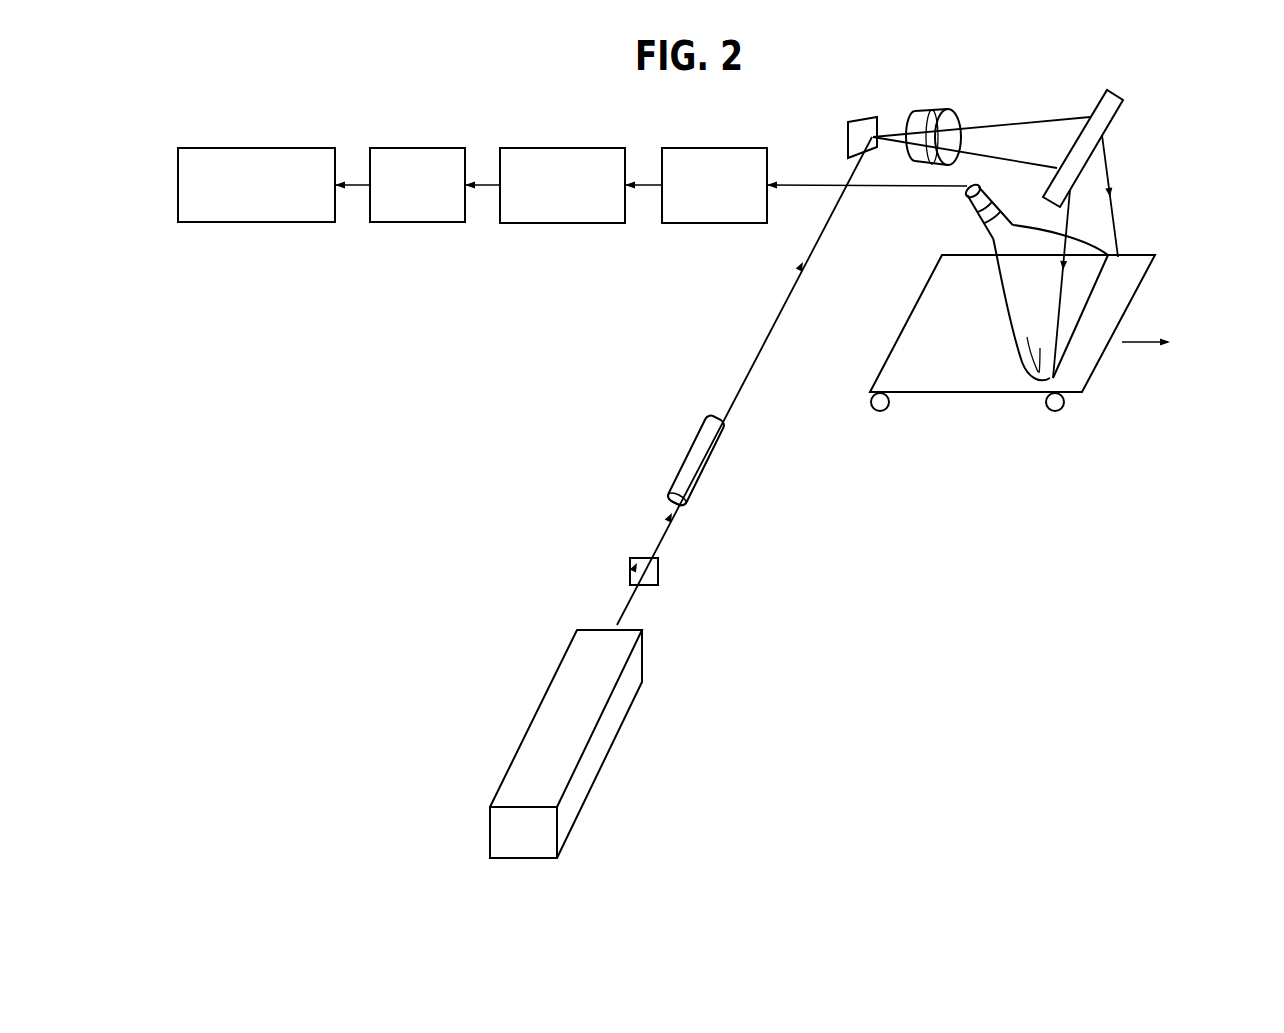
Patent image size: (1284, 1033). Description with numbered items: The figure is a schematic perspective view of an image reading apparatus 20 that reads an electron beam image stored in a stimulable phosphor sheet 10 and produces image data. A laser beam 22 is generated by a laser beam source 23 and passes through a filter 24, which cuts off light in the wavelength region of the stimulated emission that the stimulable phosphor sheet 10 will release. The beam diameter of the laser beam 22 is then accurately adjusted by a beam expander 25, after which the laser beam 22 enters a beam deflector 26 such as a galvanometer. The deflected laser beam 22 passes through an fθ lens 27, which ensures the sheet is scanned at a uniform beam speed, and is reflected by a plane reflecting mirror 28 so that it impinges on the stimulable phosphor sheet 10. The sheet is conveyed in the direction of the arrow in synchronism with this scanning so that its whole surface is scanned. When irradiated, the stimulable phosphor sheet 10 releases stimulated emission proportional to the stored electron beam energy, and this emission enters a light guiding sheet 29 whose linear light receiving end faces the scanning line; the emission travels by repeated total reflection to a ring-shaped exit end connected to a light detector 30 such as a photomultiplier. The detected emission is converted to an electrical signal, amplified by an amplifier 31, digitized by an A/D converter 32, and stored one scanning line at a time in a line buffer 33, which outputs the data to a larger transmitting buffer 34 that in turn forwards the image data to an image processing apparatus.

The stimulable phosphor sheet 10 is at (953, 370).
The image reading apparatus 20 is at (1142, 108).
The laser beam 22 is at (780, 300).
The laser beam source 23 is at (582, 660).
The filter 24 is at (635, 563).
The beam expander 25 is at (692, 465).
The beam deflector 26 is at (867, 128).
The fθ lens 27 is at (937, 112).
The plane reflecting mirror 28 is at (1102, 112).
The light guiding sheet 29 is at (1033, 372).
The light detector 30 is at (970, 202).
The amplifier 31 is at (723, 147).
The A/D converter 32 is at (563, 147).
The line buffer 33 is at (422, 147).
The transmitting buffer 34 is at (275, 147).